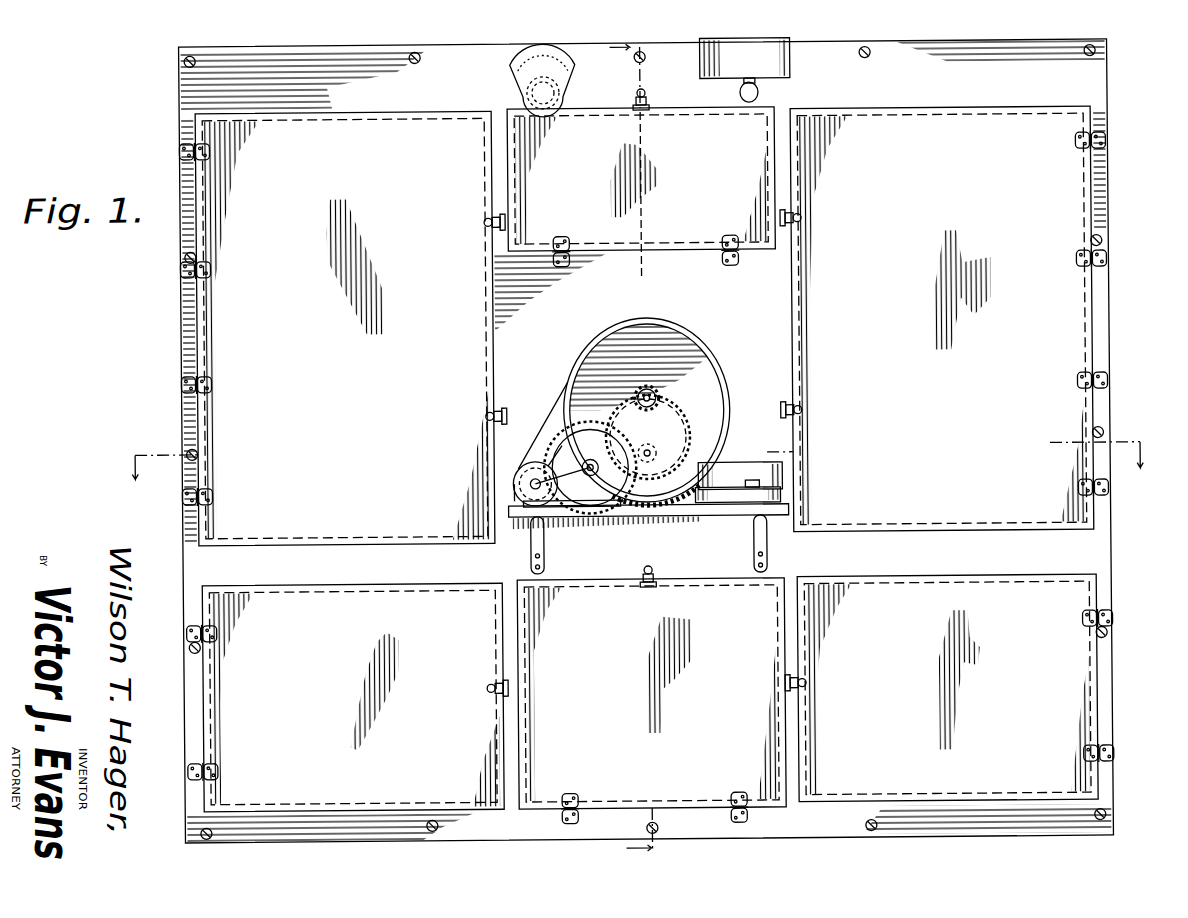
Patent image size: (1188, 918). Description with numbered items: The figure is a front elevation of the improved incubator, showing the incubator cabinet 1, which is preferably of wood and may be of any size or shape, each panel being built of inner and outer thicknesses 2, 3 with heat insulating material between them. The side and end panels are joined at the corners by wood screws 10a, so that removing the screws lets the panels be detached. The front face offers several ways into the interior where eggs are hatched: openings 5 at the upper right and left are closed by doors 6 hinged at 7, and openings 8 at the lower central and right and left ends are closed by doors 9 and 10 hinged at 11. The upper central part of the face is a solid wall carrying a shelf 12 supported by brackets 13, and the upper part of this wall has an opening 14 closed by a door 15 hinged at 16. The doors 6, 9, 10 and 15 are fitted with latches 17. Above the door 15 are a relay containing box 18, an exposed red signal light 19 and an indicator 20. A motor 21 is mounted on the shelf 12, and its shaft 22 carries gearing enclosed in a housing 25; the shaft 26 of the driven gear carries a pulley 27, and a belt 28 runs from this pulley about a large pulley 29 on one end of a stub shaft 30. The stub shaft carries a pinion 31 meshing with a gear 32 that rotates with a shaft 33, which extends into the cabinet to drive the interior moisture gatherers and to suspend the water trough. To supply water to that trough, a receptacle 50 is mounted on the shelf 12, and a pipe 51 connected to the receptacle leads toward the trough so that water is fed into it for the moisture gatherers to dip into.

The incubator cabinet 1 is at (1112, 96).
The inner thickness 2 is at (629, 448).
The outer thickness 3 is at (639, 476).
The openings 5 is at (486, 150).
The doors 6 is at (644, 326).
The hinges 7 is at (182, 148).
The openings 8 is at (310, 590).
The doors 9 is at (650, 693).
The door 10 is at (651, 693).
The wood screws 10a is at (188, 59).
The hinges 11 is at (188, 765).
The shelf 12 is at (665, 516).
The brackets 13 is at (530, 545).
The opening 14 is at (705, 116).
The door 15 is at (641, 179).
The hinges 16 is at (564, 242).
The latches 17 is at (492, 220).
The relay containing box 18 is at (744, 58).
The red signal light 19 is at (768, 90).
The indicator 20 is at (515, 82).
The motor 21 is at (592, 502).
The motor shaft 22 is at (588, 471).
The housing 25 is at (528, 488).
The shaft 26 is at (530, 487).
The pulley 27 is at (514, 477).
The belt 28 is at (528, 454).
The large pulley 29 is at (682, 343).
The stub shaft 30 is at (650, 394).
The pinion 31 is at (660, 398).
The gear 32 is at (617, 425).
The shaft 33 is at (647, 448).
The receptacle 50 is at (782, 468).
The pipe 51 is at (783, 486).